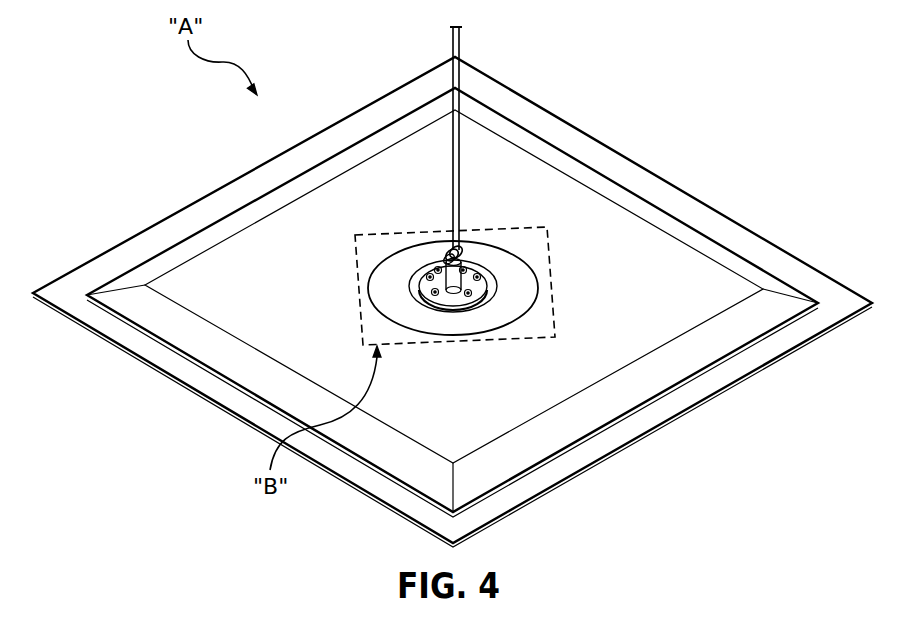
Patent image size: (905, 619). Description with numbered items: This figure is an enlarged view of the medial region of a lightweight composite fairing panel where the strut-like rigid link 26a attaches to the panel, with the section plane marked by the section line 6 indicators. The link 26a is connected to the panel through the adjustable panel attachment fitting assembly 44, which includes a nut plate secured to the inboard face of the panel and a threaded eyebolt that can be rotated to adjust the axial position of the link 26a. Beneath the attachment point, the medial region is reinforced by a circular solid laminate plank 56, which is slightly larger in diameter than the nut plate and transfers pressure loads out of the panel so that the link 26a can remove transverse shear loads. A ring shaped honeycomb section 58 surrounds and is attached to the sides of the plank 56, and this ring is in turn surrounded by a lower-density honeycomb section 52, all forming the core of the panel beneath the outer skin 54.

The rigid link 26a is at (457, 128).
The adjustable panel attachment fitting assembly 44 is at (512, 298).
The honeycomb section 52 is at (475, 402).
The outer skin 54 is at (75, 293).
The solid laminate plank 56 is at (440, 308).
The ring shaped honeycomb section 58 is at (397, 268).
The section line 6- 6 is at (125, 416).